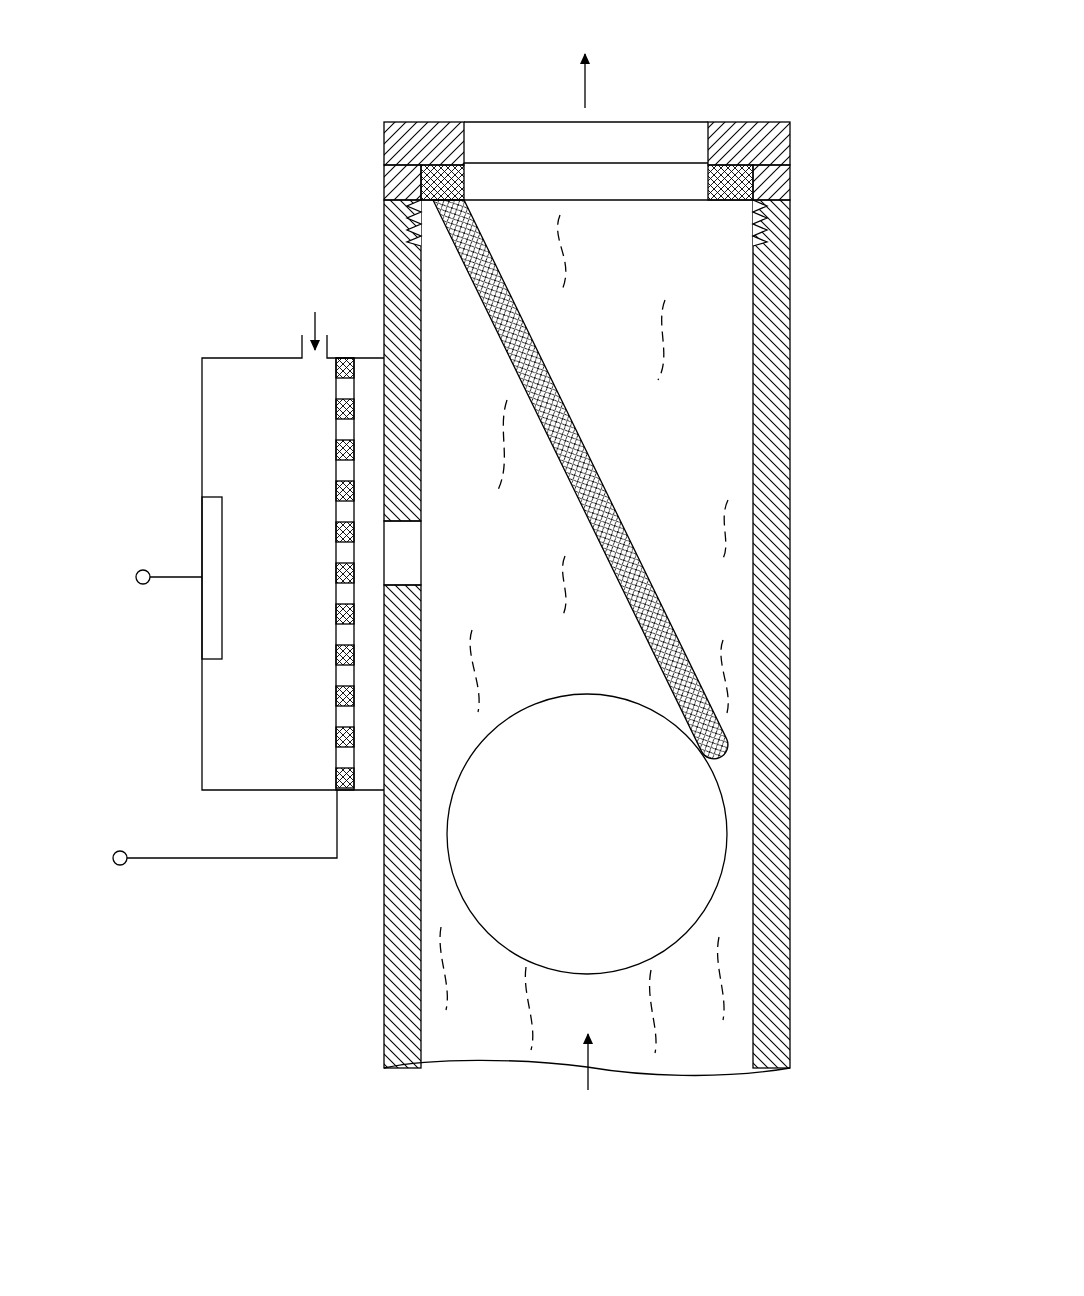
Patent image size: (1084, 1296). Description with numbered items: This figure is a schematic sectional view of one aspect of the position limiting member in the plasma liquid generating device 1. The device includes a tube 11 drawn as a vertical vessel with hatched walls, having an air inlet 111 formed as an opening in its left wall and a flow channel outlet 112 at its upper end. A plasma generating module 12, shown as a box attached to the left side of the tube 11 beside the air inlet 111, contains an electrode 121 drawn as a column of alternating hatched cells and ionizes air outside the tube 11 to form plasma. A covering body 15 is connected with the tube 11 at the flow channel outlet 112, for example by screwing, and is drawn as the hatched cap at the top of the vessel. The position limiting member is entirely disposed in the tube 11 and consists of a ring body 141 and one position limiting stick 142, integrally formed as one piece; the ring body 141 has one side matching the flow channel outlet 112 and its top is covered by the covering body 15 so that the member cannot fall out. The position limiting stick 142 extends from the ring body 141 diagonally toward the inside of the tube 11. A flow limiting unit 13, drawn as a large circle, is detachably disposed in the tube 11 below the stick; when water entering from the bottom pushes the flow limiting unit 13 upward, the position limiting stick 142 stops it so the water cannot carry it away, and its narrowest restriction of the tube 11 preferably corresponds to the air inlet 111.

The plasma liquid generating device 1 is at (262, 86).
The tube 11 is at (790, 522).
The air inlet 111 is at (403, 545).
The flow channel outlet 112 is at (679, 208).
The plasma generating module 12 is at (248, 581).
The electrode 121 is at (342, 776).
The flow limiting unit 13 is at (714, 845).
The ring body 141 is at (470, 265).
The position limiting stick 142 is at (443, 178).
The covering body 15 is at (770, 163).